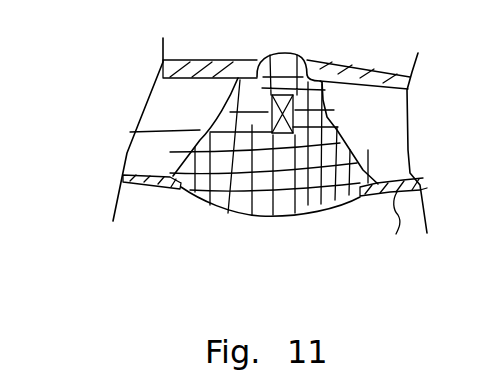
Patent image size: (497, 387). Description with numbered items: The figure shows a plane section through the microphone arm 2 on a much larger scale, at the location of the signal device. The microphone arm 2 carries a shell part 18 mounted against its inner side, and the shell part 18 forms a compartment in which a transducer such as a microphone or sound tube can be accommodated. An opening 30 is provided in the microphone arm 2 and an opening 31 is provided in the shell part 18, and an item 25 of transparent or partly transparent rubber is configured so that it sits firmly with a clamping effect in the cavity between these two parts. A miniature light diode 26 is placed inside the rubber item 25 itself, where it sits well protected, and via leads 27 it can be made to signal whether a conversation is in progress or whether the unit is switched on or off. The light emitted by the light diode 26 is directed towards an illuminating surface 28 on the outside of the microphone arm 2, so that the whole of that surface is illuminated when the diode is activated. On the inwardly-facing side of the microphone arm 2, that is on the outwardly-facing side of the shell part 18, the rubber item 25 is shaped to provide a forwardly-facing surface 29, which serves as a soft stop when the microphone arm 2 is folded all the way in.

The microphone arm 2 is at (380, 73).
The shell part 18 is at (393, 236).
The item of rubber 25 is at (232, 185).
The miniature light diode 26 is at (275, 110).
The leads 27 is at (188, 133).
The illuminating surface 28 is at (285, 95).
The forwardly-facing surface 29 is at (277, 220).
The opening 30 is at (299, 57).
The opening 31 is at (182, 186).